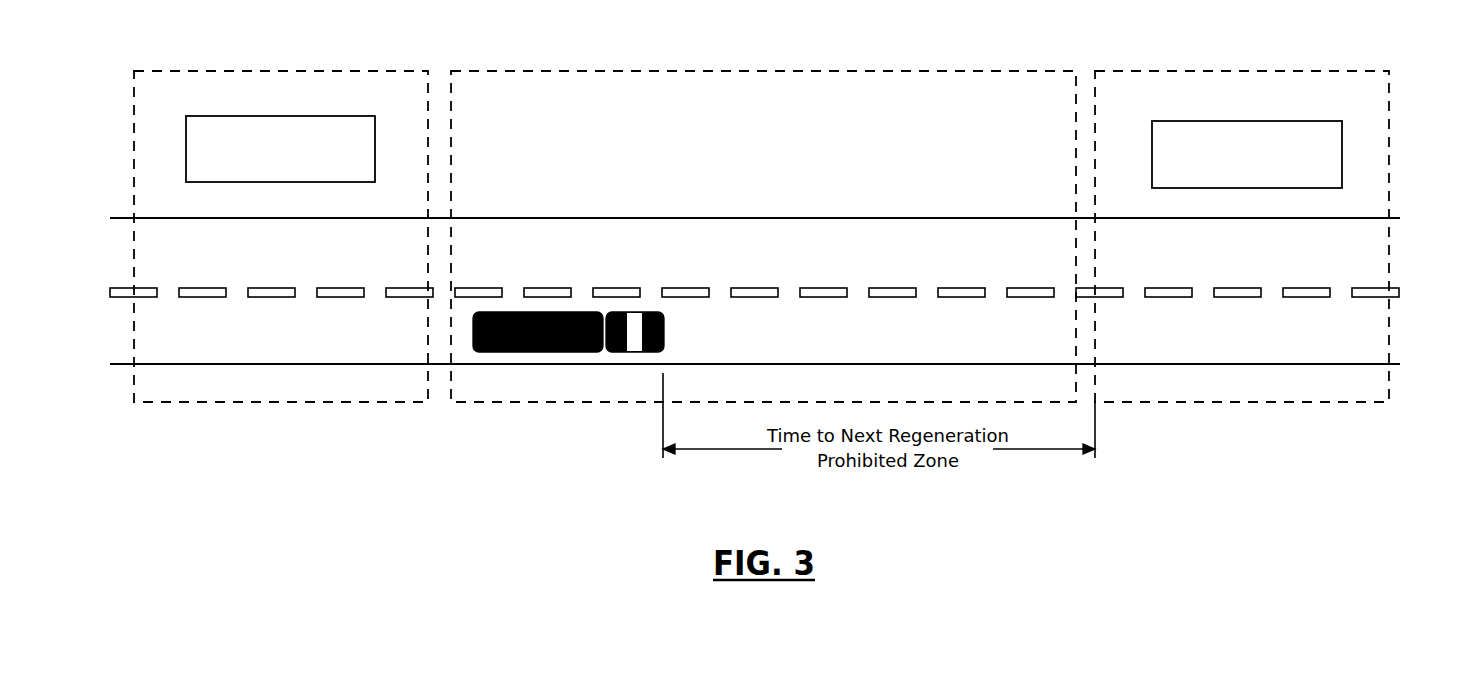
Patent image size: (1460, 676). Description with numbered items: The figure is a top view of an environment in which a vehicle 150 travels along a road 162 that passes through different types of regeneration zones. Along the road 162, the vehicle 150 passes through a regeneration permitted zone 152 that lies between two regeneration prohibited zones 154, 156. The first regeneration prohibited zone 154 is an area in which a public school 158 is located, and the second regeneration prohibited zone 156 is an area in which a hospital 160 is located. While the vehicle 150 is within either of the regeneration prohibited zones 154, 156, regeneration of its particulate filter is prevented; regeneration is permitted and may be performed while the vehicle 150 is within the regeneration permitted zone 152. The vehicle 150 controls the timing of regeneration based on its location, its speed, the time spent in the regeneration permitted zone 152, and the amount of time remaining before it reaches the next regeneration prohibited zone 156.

The vehicle 150 is at (473, 332).
The regeneration permitted zone 152 is at (512, 64).
The regeneration prohibited zone 154 is at (218, 68).
The regeneration prohibited zone 156 is at (1147, 64).
The public school 158 is at (186, 151).
The hospital 160 is at (1342, 153).
The road 162 is at (542, 218).